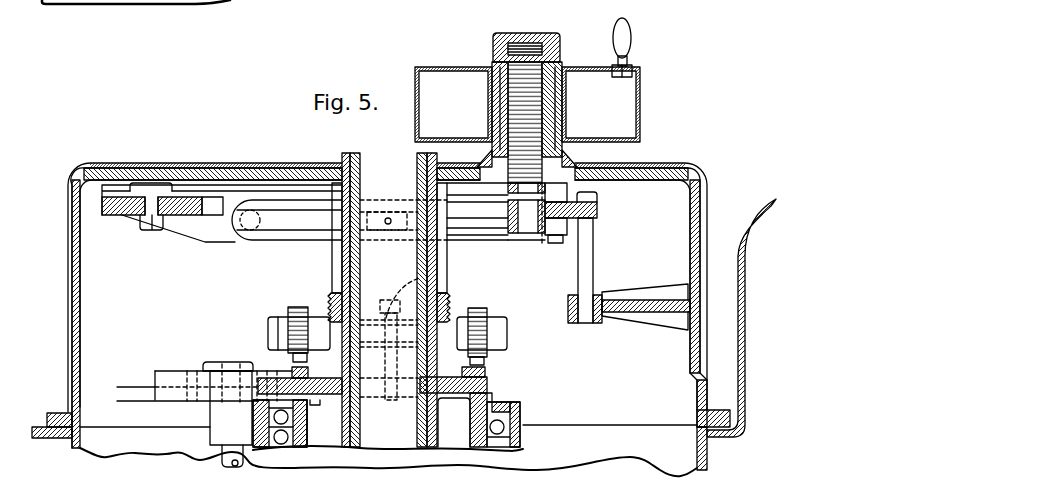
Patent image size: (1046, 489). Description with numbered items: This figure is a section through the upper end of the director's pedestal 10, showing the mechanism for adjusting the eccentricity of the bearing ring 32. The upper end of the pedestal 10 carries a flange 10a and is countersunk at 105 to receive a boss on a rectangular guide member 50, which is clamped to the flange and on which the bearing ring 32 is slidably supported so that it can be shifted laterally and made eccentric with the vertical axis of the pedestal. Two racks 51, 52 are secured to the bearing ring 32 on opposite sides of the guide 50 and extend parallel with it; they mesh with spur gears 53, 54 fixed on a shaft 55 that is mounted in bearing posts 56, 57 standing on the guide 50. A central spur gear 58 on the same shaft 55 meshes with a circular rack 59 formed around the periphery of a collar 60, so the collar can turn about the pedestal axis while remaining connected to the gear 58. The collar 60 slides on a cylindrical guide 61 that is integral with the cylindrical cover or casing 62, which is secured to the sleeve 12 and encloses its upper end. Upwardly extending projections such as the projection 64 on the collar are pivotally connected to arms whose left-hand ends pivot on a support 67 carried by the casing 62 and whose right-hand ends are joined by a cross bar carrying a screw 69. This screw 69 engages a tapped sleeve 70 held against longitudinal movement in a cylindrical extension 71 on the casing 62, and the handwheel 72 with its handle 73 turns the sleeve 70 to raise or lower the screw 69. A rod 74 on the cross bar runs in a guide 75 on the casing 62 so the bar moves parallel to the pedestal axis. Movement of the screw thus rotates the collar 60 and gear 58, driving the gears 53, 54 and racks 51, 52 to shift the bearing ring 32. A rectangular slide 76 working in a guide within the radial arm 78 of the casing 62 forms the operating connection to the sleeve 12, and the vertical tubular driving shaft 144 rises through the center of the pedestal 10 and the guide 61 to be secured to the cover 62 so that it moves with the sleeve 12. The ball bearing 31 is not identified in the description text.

The pedestal 10 is at (440, 440).
The flange 10a is at (455, 422).
The sleeve 12 is at (708, 461).
The ball bearing 31 is at (523, 422).
The bearing ring 32 is at (489, 388).
The rectangular guide member 50 is at (470, 402).
The rack 51 is at (303, 367).
The rack 52 is at (487, 371).
The spur gear 53 is at (297, 310).
The spur gear 54 is at (488, 309).
The shaft 55 is at (272, 333).
The bearing post 56 is at (293, 360).
The bearing post 57 is at (487, 359).
The central spur gear 58 is at (437, 283).
The circular rack 59 is at (448, 311).
The collar 60 is at (330, 296).
The cylindrical guide 61 is at (440, 191).
The cylindrical cover or casing 62 is at (667, 165).
The upwardly extending projection 64 is at (447, 218).
The support 67 is at (183, 226).
The screw 69 is at (557, 63).
The tapped sleeve 70 is at (548, 43).
The cylindrical extension 71 is at (490, 108).
The handwheel 72 is at (640, 100).
The handle 73 is at (629, 40).
The rod 74 is at (592, 262).
The guide 75 is at (598, 324).
The rectangular slide 76 is at (218, 365).
The radial arm 78 is at (140, 392).
The countersink 105 is at (345, 406).
The vertical tubular driving shaft 144 is at (356, 154).